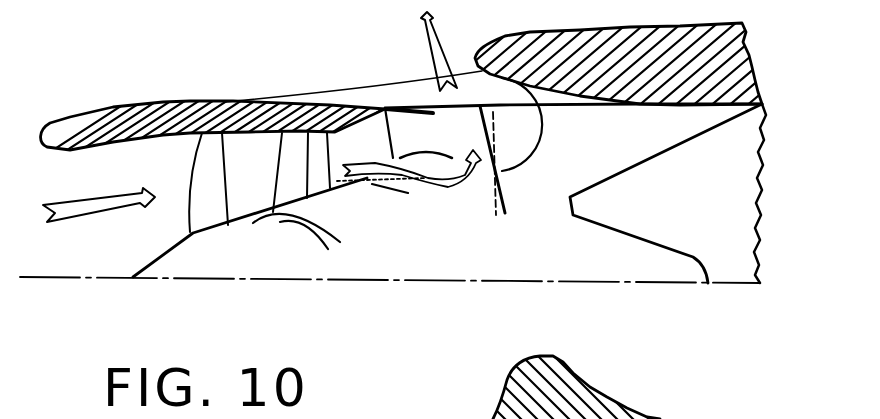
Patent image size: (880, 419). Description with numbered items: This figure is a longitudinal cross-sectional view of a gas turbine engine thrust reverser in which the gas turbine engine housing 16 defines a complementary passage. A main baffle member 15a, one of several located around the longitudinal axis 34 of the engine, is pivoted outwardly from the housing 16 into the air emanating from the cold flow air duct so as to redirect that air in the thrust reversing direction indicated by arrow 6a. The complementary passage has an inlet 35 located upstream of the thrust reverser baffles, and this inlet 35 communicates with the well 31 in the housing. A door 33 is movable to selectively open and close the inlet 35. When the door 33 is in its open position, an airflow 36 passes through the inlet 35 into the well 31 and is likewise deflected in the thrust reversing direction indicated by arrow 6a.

The arrow 6a is at (433, 52).
The main baffle member 15a is at (493, 116).
The gas turbine engine housing 16 is at (307, 185).
The well 31 is at (482, 182).
The door 33 is at (385, 186).
The longitudinal axis 34 is at (287, 278).
The inlet 35 is at (395, 165).
The airflow 36 is at (428, 184).